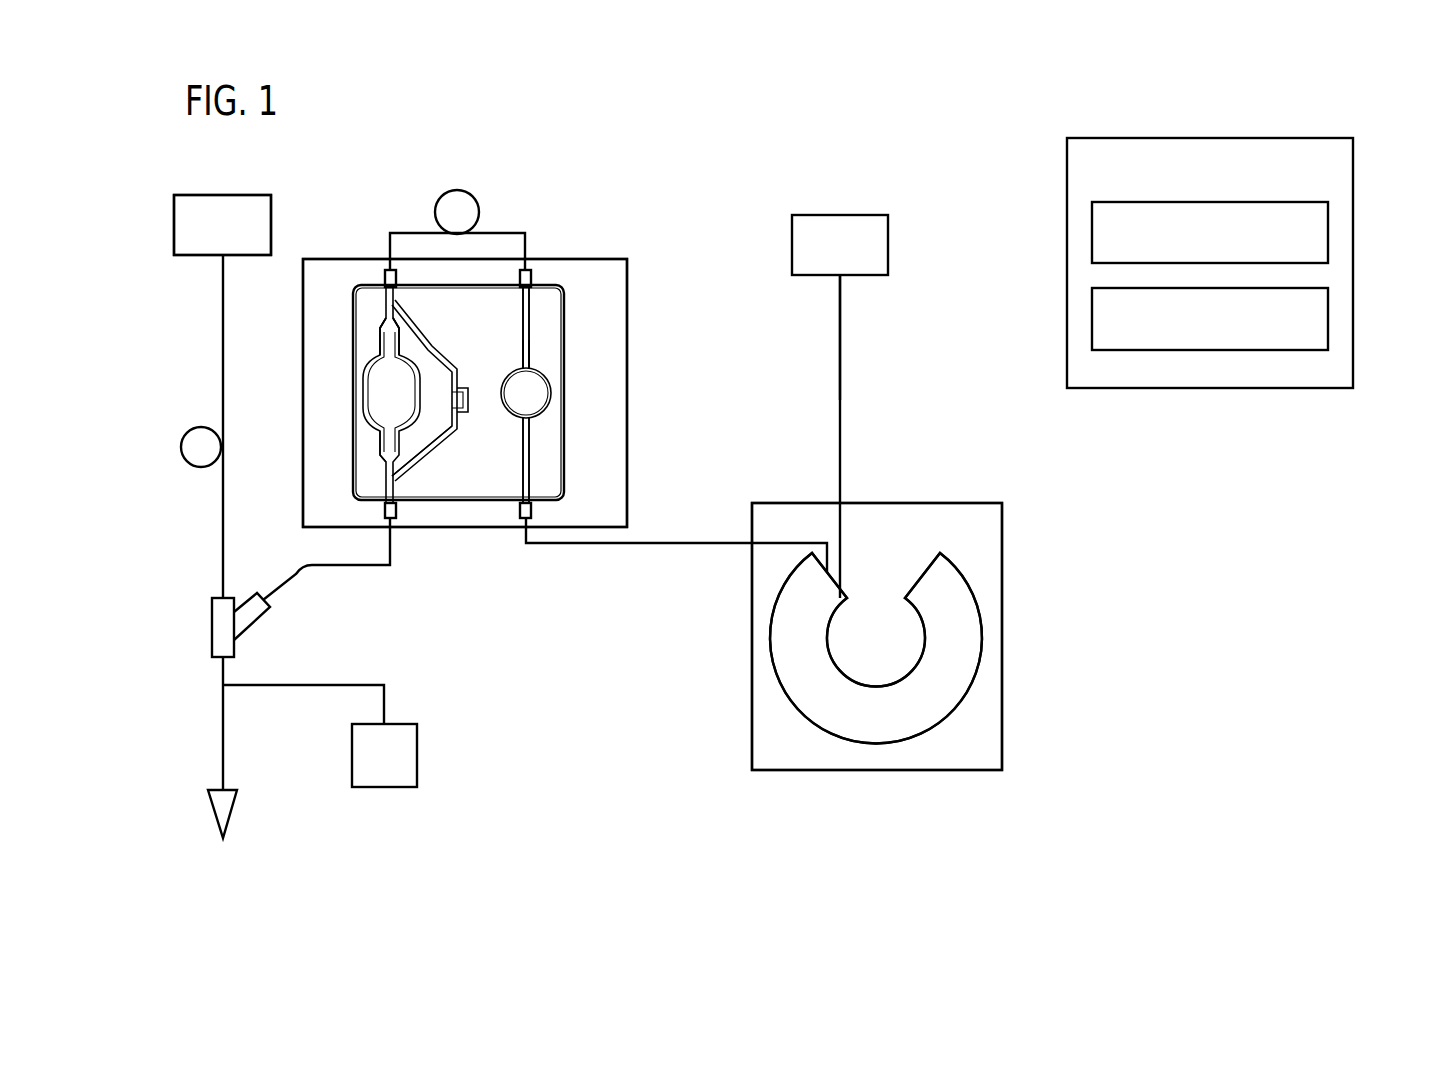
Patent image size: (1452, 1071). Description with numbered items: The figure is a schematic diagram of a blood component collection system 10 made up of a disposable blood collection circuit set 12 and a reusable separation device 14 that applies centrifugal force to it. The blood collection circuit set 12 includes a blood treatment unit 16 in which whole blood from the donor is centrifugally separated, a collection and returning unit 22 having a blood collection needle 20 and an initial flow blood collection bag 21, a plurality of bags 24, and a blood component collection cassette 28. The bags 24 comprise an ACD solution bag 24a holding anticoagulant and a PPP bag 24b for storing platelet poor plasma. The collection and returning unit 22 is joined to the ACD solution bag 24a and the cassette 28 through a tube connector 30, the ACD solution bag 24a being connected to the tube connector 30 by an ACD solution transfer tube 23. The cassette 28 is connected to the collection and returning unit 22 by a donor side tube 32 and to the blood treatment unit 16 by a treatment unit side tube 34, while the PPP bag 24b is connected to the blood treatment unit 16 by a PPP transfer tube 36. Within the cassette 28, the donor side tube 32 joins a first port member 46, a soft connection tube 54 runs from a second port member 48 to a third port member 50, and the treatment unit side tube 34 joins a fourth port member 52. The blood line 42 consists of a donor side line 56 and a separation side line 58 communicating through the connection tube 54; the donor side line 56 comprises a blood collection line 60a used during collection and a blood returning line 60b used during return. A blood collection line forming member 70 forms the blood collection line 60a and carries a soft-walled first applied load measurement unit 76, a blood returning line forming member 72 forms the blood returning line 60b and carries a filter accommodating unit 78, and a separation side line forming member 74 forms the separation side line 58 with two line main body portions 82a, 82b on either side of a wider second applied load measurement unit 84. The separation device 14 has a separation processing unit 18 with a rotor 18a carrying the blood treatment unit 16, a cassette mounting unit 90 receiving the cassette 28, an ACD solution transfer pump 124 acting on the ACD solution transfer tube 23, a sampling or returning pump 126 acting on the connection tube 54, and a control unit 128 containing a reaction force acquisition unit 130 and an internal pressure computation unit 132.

The blood component collection system 10 is at (648, 214).
The blood collection circuit set 12 is at (876, 313).
The separation device 14 is at (733, 635).
The blood treatment unit 16 is at (774, 607).
The separation processing unit 18 is at (918, 497).
The rotor 18a is at (877, 636).
The blood collection needle 20 is at (212, 810).
The initial flow blood collection bag 21 is at (385, 790).
The collection and returning unit 22 is at (198, 727).
The ACD solution transfer tube 23 is at (222, 336).
The bags 24 is at (225, 195).
The ACD solution bag 24a is at (222, 225).
The PPP bag 24b is at (840, 213).
The blood component collection cassette 28 is at (357, 286).
The tube connector 30 is at (211, 624).
The donor side tube 32 is at (341, 567).
The treatment unit side tube 34 is at (695, 542).
The PPP transfer tube 36 is at (843, 360).
The blood line 42 is at (655, 355).
The first port member 46 is at (396, 512).
The second port member 48 is at (383, 278).
The third port member 50 is at (531, 276).
The fourth port member 52 is at (521, 512).
The connection tube 54 is at (494, 232).
The donor side line 56 is at (383, 350).
The separation side line 58 is at (532, 363).
The blood collection line 60a is at (447, 440).
The blood returning line 60b is at (383, 433).
The blood collection line forming member 70 is at (442, 355).
The blood returning line forming member 72 is at (386, 322).
The separation side line forming member 74 is at (530, 310).
The first applied load measurement unit 76 is at (470, 400).
The filter accommodating unit 78 is at (380, 390).
The line main body portion 82a is at (530, 335).
The line main body portion 82b is at (530, 460).
The second applied load measurement unit 84 is at (532, 392).
The cassette mounting unit 90 is at (460, 530).
The ACD solution transfer pump 124 is at (181, 442).
The sampling or returning pump 126 is at (457, 190).
The control unit 128 is at (1066, 165).
The reaction force acquisition unit 130 is at (1328, 232).
The internal pressure computation unit 132 is at (1328, 318).